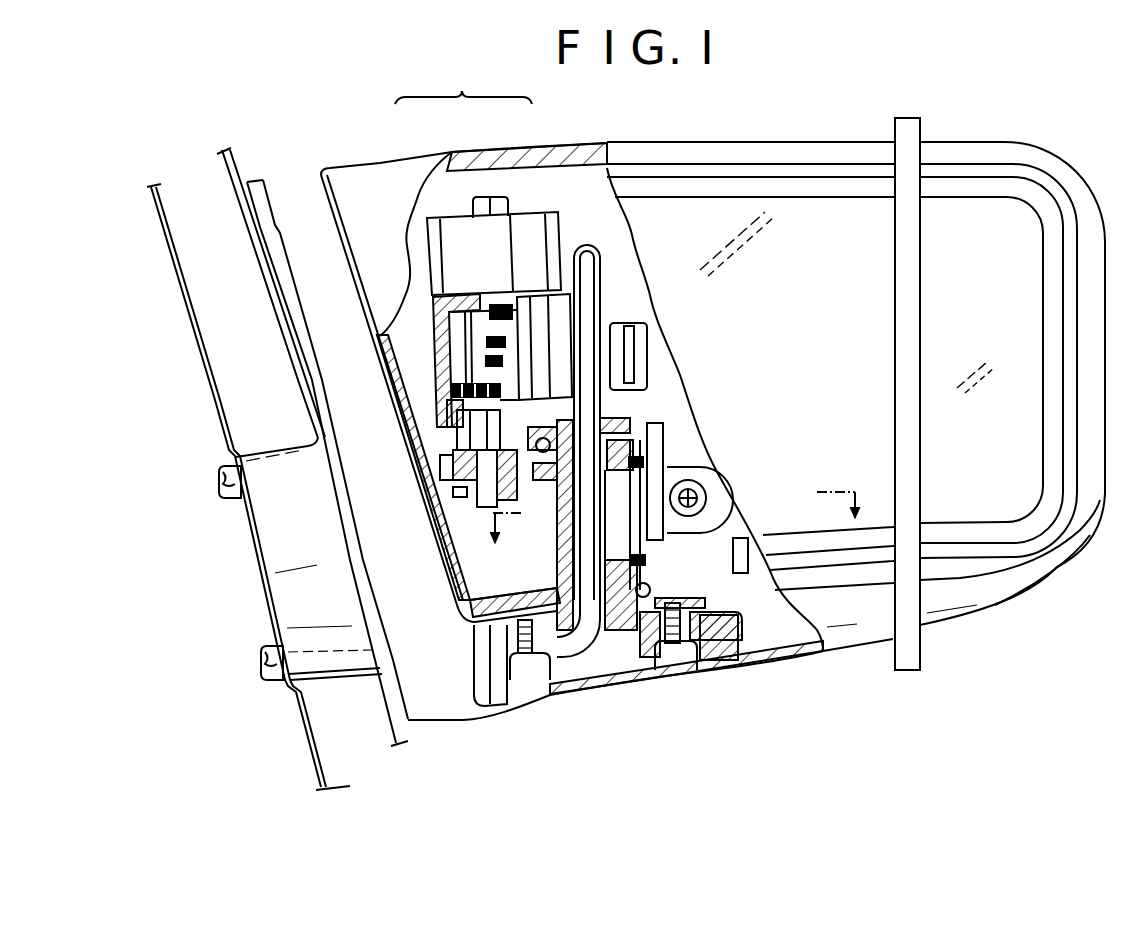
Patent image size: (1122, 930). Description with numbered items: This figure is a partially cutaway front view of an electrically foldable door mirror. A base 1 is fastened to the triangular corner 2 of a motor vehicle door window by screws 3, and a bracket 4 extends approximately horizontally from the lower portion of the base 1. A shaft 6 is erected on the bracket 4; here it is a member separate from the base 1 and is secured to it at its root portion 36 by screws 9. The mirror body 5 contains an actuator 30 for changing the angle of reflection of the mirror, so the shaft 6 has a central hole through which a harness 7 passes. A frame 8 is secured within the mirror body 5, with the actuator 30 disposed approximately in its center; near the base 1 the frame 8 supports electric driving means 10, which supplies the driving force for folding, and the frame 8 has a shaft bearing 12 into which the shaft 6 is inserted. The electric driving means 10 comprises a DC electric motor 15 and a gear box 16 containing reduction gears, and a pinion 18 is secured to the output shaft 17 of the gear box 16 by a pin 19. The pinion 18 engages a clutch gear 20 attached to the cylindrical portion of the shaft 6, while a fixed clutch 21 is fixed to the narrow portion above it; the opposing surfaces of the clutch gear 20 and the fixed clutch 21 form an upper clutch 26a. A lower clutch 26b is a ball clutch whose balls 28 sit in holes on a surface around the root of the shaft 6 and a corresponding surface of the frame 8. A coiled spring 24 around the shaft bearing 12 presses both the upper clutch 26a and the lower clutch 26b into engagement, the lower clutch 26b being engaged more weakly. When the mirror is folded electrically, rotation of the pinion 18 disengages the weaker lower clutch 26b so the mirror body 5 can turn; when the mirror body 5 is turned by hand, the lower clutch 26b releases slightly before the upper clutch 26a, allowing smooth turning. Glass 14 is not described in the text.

The base 1 is at (295, 622).
The triangular corner 2 is at (234, 172).
The screws 3 is at (220, 483).
The bracket 4 is at (740, 667).
The mirror body 5 is at (762, 145).
The shaft 6 is at (620, 620).
The harness 7 is at (575, 660).
The frame 8 is at (690, 612).
The screws 9 is at (535, 660).
The electric driving means 10 is at (463, 87).
The shaft bearing 12 is at (557, 520).
The window glass 14 is at (953, 207).
The DC electric motor 15 is at (450, 230).
The gear box 16 is at (528, 225).
The output shaft 17 is at (483, 510).
The pinion 18 is at (453, 452).
The pin 19 is at (453, 492).
The clutch gear 20 is at (640, 440).
The fixed clutch 21 is at (630, 425).
The coiled spring 24 is at (645, 555).
The upper clutch 26a is at (515, 432).
The lower clutch 26b is at (683, 583).
The balls 28 is at (652, 590).
The actuator 30 is at (653, 347).
The root portion 36 is at (500, 645).